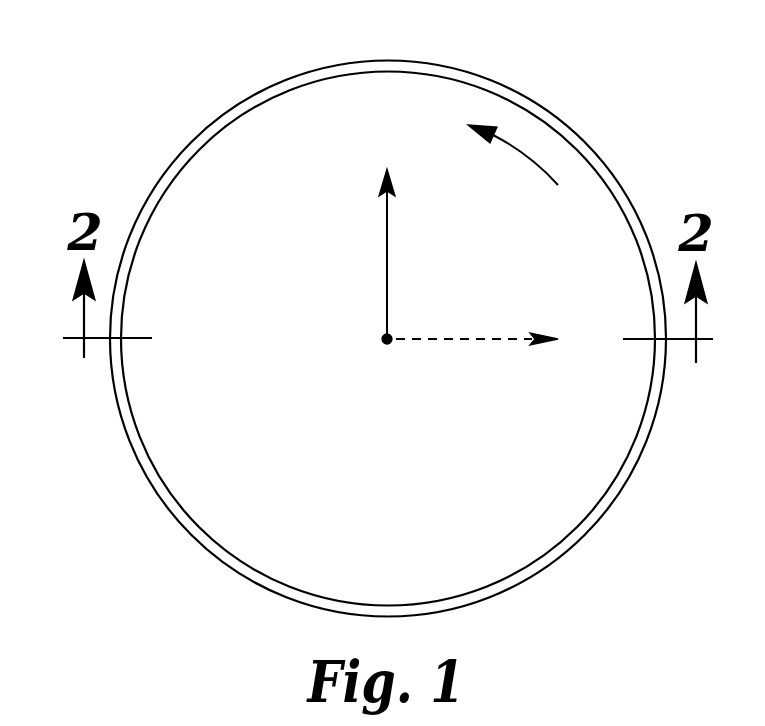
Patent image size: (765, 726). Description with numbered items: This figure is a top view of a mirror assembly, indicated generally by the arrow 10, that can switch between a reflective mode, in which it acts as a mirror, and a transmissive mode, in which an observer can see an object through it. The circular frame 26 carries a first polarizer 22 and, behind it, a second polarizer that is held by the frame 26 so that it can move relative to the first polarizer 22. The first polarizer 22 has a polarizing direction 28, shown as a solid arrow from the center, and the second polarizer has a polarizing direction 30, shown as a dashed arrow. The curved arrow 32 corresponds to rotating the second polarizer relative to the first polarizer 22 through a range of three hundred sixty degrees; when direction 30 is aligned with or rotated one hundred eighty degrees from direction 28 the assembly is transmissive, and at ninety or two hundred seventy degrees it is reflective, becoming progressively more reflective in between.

The liquid crystal display device 10 is at (562, 56).
The first polarizer 22 is at (191, 281).
The frame 26 is at (603, 515).
The polarizing direction 28 is at (386, 246).
The polarizing direction 30 is at (446, 338).
The rotation direction 32 is at (520, 153).